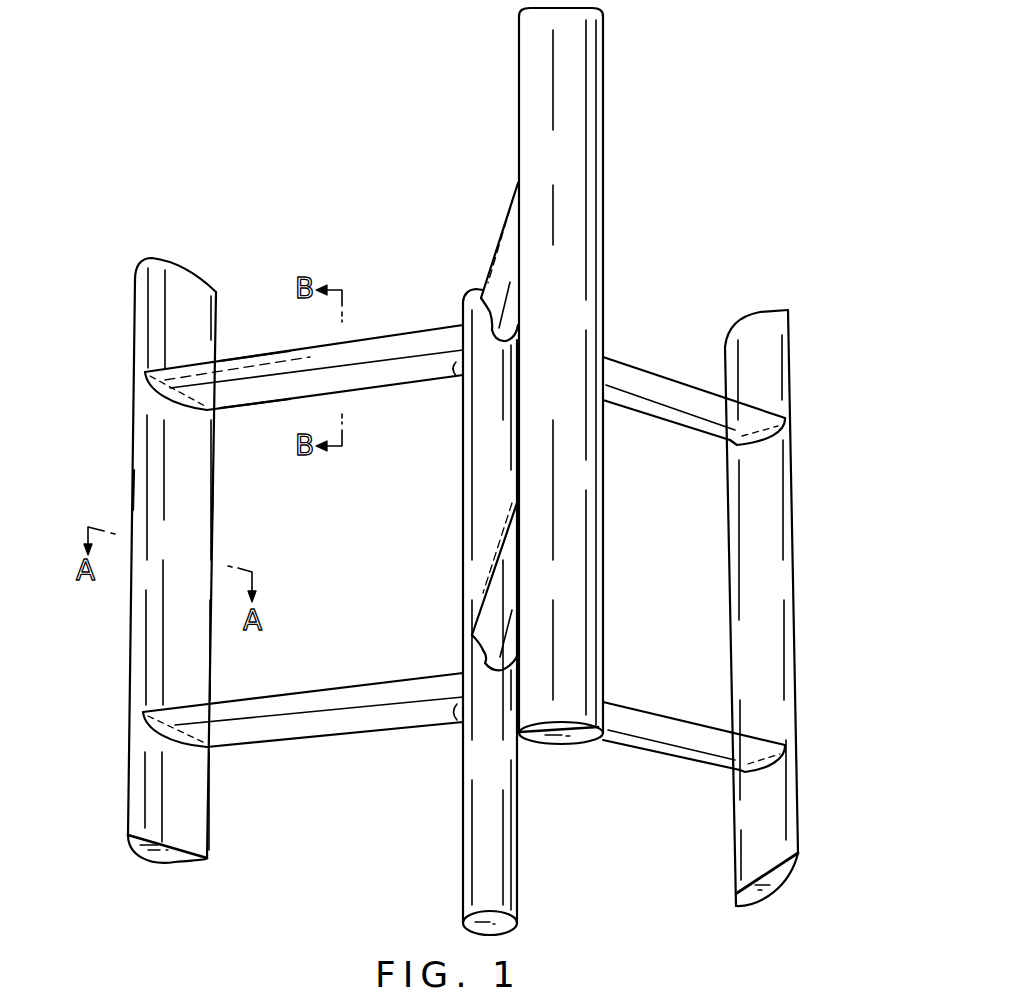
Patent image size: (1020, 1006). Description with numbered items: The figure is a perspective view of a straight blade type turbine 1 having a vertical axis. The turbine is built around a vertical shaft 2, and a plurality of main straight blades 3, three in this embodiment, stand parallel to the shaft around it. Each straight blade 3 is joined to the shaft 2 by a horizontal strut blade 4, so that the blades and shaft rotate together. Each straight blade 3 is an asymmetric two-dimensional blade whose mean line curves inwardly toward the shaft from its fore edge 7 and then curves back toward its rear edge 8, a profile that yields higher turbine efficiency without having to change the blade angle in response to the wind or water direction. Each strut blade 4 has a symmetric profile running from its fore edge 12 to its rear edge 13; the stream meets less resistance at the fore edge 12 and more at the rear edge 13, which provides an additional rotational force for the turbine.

The straight blade type turbine 1 is at (688, 124).
The vertical shaft 2 is at (462, 566).
The main straight blade 3 is at (603, 556).
The horizontal strut blade 4 is at (497, 250).
The fore edge 7 is at (134, 490).
The rear edge 8 is at (212, 496).
The fore edge 12 is at (245, 359).
The rear edge 13 is at (247, 405).